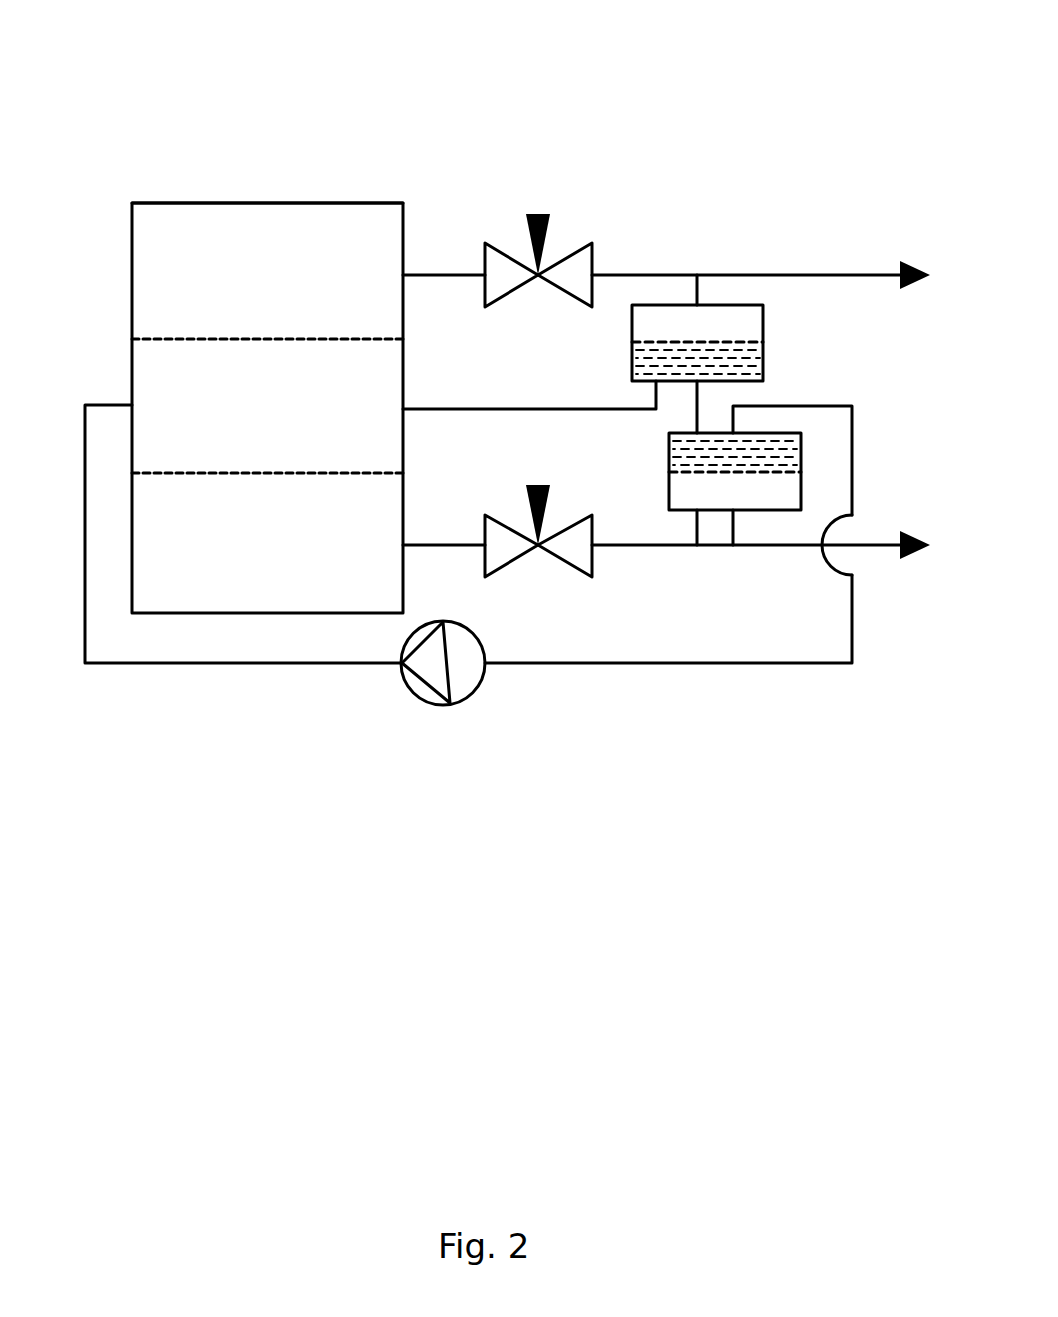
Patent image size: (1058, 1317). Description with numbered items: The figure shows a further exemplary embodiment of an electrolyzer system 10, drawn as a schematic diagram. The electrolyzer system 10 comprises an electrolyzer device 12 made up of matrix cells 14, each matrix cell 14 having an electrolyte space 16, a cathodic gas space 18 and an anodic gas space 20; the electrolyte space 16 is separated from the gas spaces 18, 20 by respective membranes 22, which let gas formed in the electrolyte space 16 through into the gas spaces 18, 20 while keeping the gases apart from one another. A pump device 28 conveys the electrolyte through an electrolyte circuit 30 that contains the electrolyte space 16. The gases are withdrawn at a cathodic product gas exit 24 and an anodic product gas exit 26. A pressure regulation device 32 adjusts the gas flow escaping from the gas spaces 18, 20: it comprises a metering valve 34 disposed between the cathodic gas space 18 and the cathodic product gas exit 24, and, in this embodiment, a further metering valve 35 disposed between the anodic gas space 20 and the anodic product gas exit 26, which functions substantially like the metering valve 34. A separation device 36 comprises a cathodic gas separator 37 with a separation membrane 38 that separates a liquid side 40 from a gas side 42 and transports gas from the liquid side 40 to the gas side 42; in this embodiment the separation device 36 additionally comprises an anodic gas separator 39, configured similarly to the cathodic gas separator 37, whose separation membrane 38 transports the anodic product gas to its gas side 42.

The electrolyzer system 10 is at (335, 62).
The electrolyzer device 12 is at (345, 165).
The matrix cell 14 is at (237, 203).
The electrolyte space 16 is at (140, 364).
The cathodic gas space 18 is at (146, 257).
The anodic gas space 20 is at (148, 530).
The membrane 22 is at (253, 341).
The cathodic product gas exit 24 is at (913, 262).
The anodic product gas exit 26 is at (907, 560).
The pump device 28 is at (448, 706).
The electrolyte circuit 30 is at (540, 409).
The pressure regulation device 32 is at (535, 138).
The metering valve 34 is at (552, 218).
The further metering valve 35 is at (530, 487).
The separation device 36 is at (715, 200).
The cathodic gas separator 37 is at (740, 305).
The separation membrane 38 is at (763, 342).
The anodic gas separator 39 is at (697, 512).
The liquid side 40 is at (752, 322).
The gas side 42 is at (748, 366).